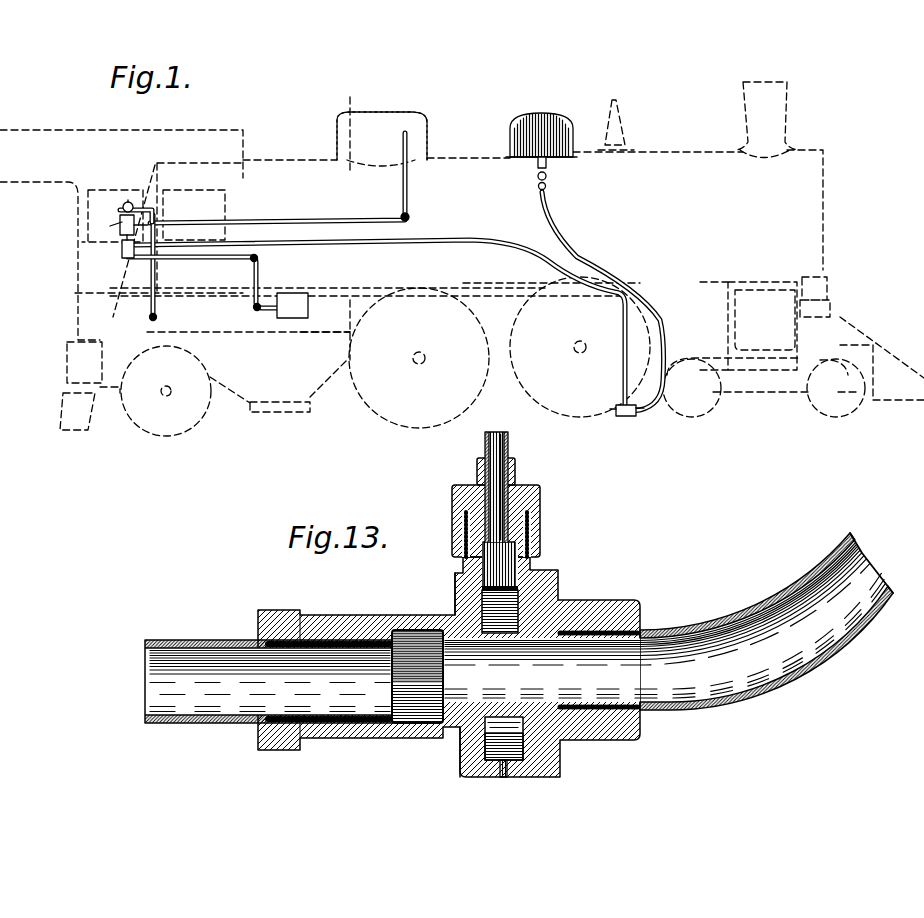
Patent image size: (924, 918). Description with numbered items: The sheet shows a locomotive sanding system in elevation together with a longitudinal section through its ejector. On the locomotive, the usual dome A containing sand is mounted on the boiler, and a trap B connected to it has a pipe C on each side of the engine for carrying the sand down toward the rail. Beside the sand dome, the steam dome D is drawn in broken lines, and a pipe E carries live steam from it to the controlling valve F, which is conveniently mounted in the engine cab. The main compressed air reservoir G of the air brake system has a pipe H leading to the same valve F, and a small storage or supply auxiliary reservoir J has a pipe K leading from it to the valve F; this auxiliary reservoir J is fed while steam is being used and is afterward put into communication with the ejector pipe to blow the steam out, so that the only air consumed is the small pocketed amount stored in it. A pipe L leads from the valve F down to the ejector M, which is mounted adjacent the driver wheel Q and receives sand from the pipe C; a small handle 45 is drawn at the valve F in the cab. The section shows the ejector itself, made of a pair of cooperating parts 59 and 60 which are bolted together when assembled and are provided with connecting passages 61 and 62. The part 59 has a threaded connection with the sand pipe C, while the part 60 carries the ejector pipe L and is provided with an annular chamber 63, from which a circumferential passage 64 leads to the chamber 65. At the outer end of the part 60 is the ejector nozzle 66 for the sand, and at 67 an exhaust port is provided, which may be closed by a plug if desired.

In FIG. 1, the dome A is at (530, 152).
In FIG. 1, the trap B is at (550, 180).
In FIG. 1, the pipe C is at (590, 254).
In FIG. 13, the pipe C is at (710, 625).
In FIG. 1, the sand dome D is at (377, 158).
In FIG. 1, the pipe E is at (283, 218).
In FIG. 1, the controlling valve F is at (120, 227).
In FIG. 1, the main compressed air reservoir G is at (248, 322).
In FIG. 1, the pipe H is at (158, 268).
In FIG. 1, the auxiliary reservoir J is at (290, 320).
In FIG. 1, the pipe K is at (262, 270).
In FIG. 1, the ejector pipe L is at (437, 237).
In FIG. 13, the ejector pipe L is at (508, 446).
In FIG. 1, the ejector M is at (625, 417).
In FIG. 1, the driver wheel Q is at (586, 408).
In FIG. 1, the handle 45 is at (125, 206).
In FIG. 13, the part 59 is at (585, 603).
In FIG. 13, the part 60 is at (378, 622).
In FIG. 13, the connecting passage 61 is at (462, 688).
In FIG. 13, the connecting passage 62 is at (333, 700).
In FIG. 13, the annular chamber 63 is at (518, 583).
In FIG. 13, the circumferential passage 64 is at (462, 745).
In FIG. 13, the chamber 65 is at (398, 737).
In FIG. 13, the ejector nozzle 66 is at (183, 700).
In FIG. 13, the exhaust port 67 is at (503, 770).